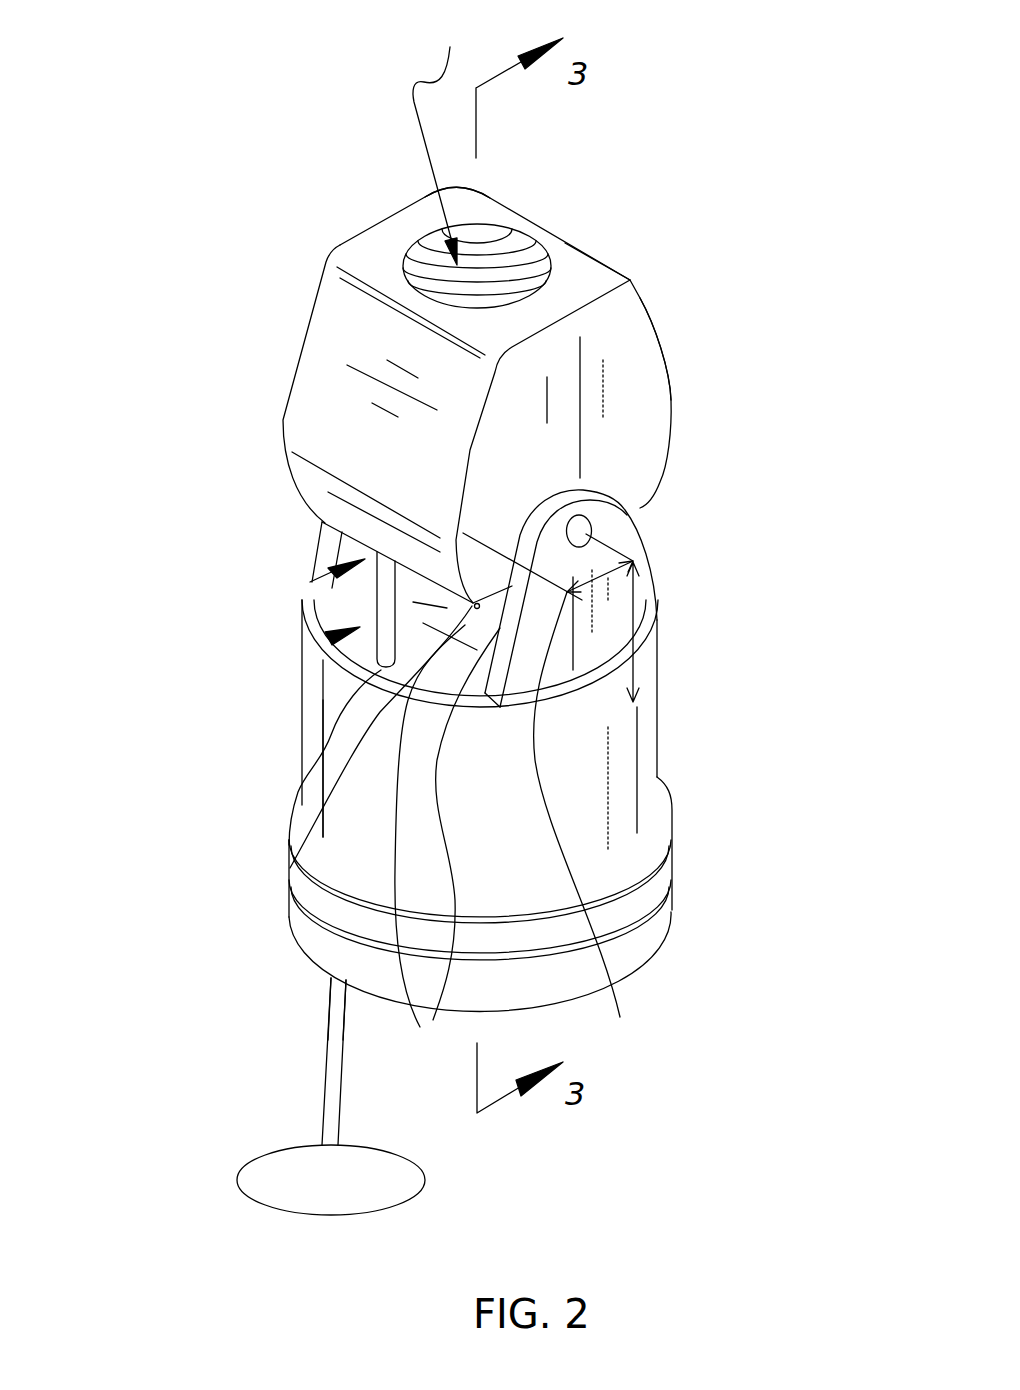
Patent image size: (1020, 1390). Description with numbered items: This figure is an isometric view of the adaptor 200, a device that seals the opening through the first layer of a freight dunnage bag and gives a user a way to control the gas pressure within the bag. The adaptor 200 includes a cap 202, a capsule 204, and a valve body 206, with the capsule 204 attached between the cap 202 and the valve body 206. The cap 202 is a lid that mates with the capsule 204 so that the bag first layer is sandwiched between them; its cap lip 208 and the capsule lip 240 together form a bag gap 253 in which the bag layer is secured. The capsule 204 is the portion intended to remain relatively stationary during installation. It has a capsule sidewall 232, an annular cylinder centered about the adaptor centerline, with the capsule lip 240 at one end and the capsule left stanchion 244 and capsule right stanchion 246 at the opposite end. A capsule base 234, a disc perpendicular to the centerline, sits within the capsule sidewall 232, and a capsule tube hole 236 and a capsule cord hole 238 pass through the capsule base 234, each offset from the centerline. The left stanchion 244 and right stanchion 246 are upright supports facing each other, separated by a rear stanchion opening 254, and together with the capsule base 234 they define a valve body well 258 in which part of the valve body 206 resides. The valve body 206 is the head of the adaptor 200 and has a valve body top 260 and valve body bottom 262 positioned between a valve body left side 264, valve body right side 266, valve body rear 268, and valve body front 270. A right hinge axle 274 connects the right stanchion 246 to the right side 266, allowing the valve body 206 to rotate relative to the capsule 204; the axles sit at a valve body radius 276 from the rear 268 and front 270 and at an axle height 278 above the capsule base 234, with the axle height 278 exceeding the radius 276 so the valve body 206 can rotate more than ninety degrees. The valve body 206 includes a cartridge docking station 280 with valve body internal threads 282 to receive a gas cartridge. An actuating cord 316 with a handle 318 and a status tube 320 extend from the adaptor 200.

The adaptor 200 is at (302, 320).
The cap 202 is at (665, 913).
The capsule 204 is at (642, 745).
The valve body 206 is at (633, 312).
The cap lip 208 is at (640, 955).
The capsule sidewall 232 is at (288, 862).
The capsule base 234 is at (446, 858).
The capsule tube hole 236 is at (327, 1007).
The capsule cord hole 238 is at (320, 770).
The capsule lip 240 is at (670, 838).
The capsule left stanchion 244 is at (323, 556).
The capsule right stanchion 246 is at (645, 582).
The bag gap 253 is at (670, 862).
The rear stanchion opening 254 is at (312, 582).
The valve body well 258 is at (325, 637).
The valve body top 260 is at (490, 212).
The valve body bottom 262 is at (322, 522).
The valve body left side 264 is at (366, 230).
The valve body right side 266 is at (610, 360).
The valve body rear 268 is at (300, 403).
The valve body front 270 is at (610, 264).
The right hinge axle 274 is at (593, 533).
The valve body radius 276 is at (596, 831).
The axle height 278 is at (643, 707).
The cartridge docking station 280 is at (477, 155).
The valve body internal threads 282 is at (535, 252).
The actuating cord 316 is at (375, 647).
The handle 318 is at (311, 1197).
The status tube 320 is at (345, 835).